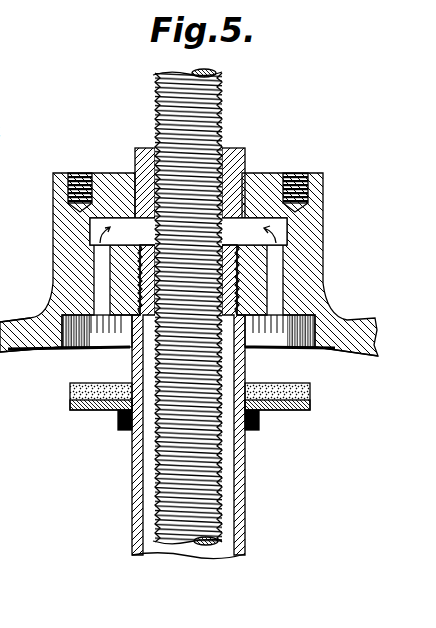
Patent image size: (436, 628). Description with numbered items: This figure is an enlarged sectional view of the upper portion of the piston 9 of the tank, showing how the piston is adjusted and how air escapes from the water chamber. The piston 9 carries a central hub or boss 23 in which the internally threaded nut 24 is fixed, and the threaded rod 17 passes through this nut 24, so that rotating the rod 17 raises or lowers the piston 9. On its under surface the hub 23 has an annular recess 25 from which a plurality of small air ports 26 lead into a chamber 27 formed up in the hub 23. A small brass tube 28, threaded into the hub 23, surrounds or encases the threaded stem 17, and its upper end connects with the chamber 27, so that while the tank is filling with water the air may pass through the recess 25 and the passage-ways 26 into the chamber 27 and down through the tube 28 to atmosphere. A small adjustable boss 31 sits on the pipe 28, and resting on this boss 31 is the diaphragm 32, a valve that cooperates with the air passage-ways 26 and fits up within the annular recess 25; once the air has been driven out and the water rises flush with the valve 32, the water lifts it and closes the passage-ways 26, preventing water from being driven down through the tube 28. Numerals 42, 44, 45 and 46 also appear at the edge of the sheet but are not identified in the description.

The piston 9 is at (32, 333).
The threaded rod 17 is at (222, 110).
The central hub or boss 23 is at (310, 238).
The internally threaded nut 24 is at (237, 150).
The annular recess 25 is at (301, 326).
The air ports 26 is at (97, 266).
The chamber 27 is at (92, 228).
The brass tube 28 is at (252, 431).
The adjustable boss 31 is at (125, 428).
The diaphragm 32 is at (317, 384).
The member 42 is at (11, 184).
The member 44 is at (10, 109).
The member 45 is at (10, 66).
The member 46 is at (10, 422).